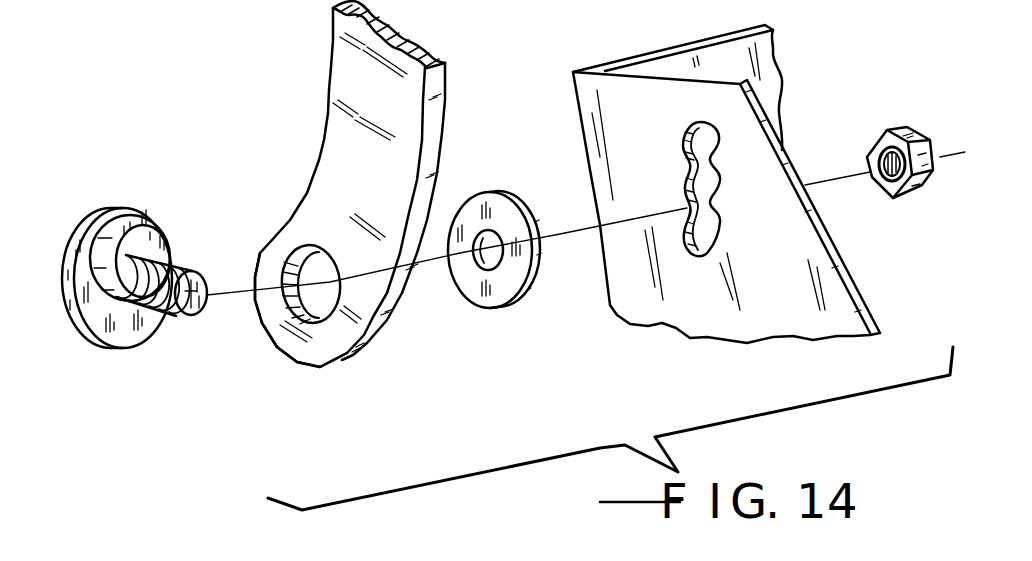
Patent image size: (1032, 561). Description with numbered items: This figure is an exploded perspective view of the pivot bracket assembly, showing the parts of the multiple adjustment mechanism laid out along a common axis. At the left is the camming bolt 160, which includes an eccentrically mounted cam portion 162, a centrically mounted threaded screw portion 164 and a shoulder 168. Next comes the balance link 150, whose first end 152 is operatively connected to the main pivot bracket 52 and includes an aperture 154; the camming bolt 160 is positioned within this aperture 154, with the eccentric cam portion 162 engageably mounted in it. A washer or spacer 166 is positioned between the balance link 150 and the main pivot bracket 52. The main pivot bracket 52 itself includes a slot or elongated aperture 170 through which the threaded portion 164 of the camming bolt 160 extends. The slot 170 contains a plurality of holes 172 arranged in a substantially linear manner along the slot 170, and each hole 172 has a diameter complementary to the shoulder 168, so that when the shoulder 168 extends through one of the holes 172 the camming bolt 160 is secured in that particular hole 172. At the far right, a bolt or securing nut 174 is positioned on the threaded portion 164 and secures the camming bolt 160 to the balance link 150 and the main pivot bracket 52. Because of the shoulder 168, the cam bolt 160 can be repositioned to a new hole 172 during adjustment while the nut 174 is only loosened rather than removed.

The main pivot bracket 52 is at (575, 105).
The balance link 150 is at (328, 38).
The first end 152 is at (255, 243).
The aperture 154 is at (312, 256).
The camming bolt 160 is at (108, 204).
The eccentrically mounted cam portion 162 is at (150, 216).
The centrically mounted threaded screw portion 164 is at (193, 268).
The washer or spacer 166 is at (484, 185).
The shoulder 168 is at (140, 308).
The slot or elongated aperture 170 is at (688, 128).
The holes 172 is at (685, 168).
The bolt or securing nut 174 is at (875, 140).